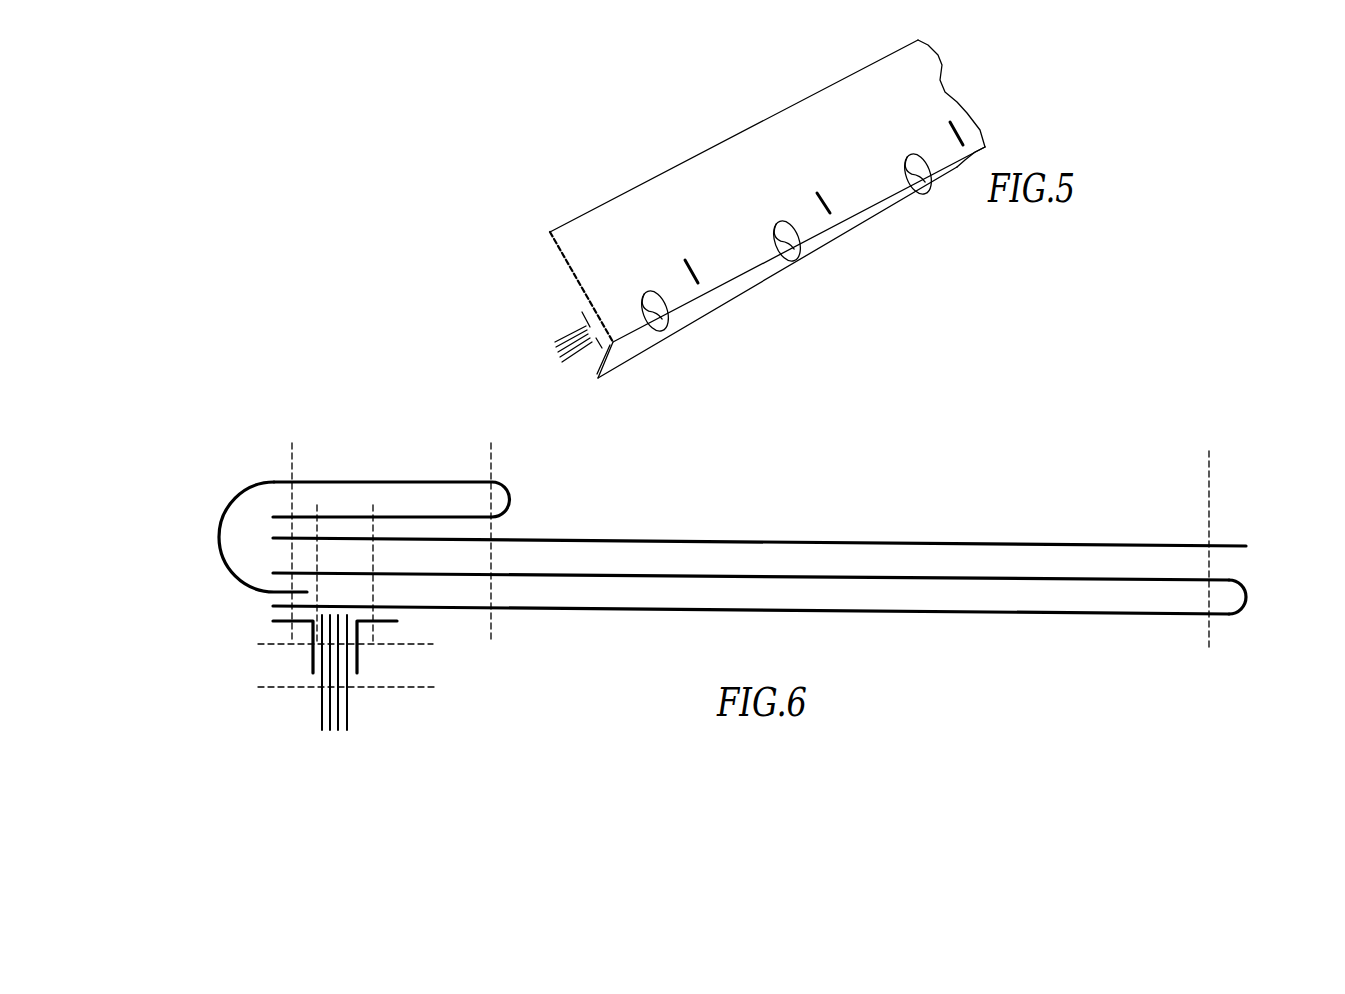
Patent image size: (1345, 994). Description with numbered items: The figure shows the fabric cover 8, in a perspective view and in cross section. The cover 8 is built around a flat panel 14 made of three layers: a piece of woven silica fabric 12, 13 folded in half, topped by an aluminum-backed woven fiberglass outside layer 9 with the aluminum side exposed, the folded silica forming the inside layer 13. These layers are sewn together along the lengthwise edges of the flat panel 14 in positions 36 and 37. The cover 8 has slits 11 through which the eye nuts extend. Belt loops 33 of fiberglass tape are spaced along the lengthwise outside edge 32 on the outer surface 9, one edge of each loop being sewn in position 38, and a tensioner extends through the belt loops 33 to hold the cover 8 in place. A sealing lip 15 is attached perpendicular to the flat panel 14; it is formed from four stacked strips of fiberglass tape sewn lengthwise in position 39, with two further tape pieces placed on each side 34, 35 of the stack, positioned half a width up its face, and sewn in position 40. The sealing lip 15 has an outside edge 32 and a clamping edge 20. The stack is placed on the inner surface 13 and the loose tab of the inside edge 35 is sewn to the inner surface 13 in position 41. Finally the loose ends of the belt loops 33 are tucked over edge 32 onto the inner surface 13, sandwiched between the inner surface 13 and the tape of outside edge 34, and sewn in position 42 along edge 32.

In FIG. 6, the cover 8 is at (1135, 437).
In FIG. 6, the outside layer 9 is at (1180, 543).
In FIG. 5, the slits 11 is at (700, 250).
In FIG. 6, the woven silica fabric 12 is at (1087, 580).
In FIG. 6, the inside layer 13 is at (928, 615).
In FIG. 6, the flat panel 14 is at (1248, 528).
In FIG. 6, the sealing lip 15 is at (332, 738).
In FIG. 6, the clamping edge 20 is at (1224, 665).
In FIG. 6, the outside edge 32 is at (197, 542).
In FIG. 5, the belt loops 33 is at (785, 213).
In FIG. 6, the belt loops 33 is at (308, 482).
In FIG. 6, the outside edge tape 34 is at (283, 663).
In FIG. 6, the inside edge tape 35 is at (392, 666).
In FIG. 6, the sewing position 36 is at (1209, 648).
In FIG. 6, the sewing position 37 is at (318, 507).
In FIG. 6, the sewing position 38 is at (492, 453).
In FIG. 6, the sewing position 39 is at (378, 688).
In FIG. 6, the sewing position 40 is at (433, 645).
In FIG. 6, the sewing position 41 is at (373, 507).
In FIG. 6, the sewing position 42 is at (293, 453).